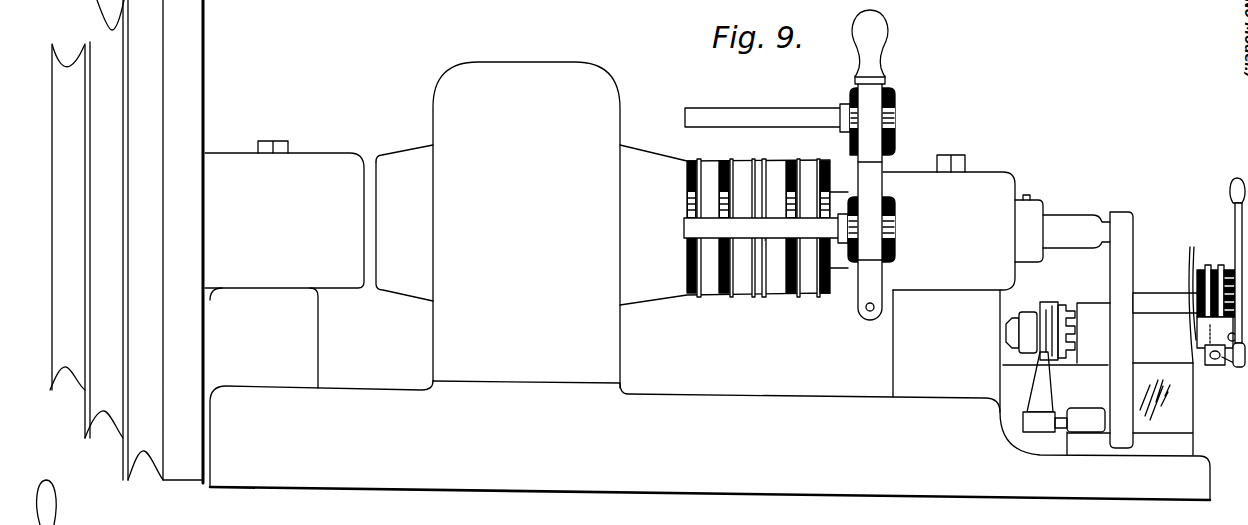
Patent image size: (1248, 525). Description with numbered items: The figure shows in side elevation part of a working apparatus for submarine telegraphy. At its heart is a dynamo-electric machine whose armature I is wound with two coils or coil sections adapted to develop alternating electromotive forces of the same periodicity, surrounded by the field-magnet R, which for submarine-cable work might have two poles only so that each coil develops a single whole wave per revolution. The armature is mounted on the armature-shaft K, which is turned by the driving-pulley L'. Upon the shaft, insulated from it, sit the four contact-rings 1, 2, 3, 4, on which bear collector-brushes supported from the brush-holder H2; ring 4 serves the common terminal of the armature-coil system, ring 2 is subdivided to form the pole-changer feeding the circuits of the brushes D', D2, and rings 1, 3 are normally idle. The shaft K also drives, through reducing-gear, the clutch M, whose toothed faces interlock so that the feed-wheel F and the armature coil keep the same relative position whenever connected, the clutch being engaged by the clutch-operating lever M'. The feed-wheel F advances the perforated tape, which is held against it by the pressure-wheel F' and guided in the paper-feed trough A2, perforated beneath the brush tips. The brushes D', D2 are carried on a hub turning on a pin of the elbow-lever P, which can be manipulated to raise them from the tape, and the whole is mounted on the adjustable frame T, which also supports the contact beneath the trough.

The driving-pulley L' is at (136, 262).
The field-magnet R is at (622, 107).
The armature I is at (641, 154).
The contact-ring 1 is at (712, 162).
The contact-ring 2 is at (748, 162).
The contact-ring 3 is at (795, 162).
The contact-ring 4 is at (808, 164).
The brush-holder H2 is at (884, 165).
The armature-shaft K is at (1068, 222).
The clutch M is at (1040, 320).
The clutch-operating lever M' is at (1053, 392).
The elbow-lever P is at (1233, 222).
The brush D' is at (1204, 274).
The brush D2 is at (1221, 270).
The pressure-wheel F' is at (1166, 304).
The paper-feed trough A2 is at (1197, 330).
The feed-wheel F is at (1210, 371).
The frame T is at (1240, 353).